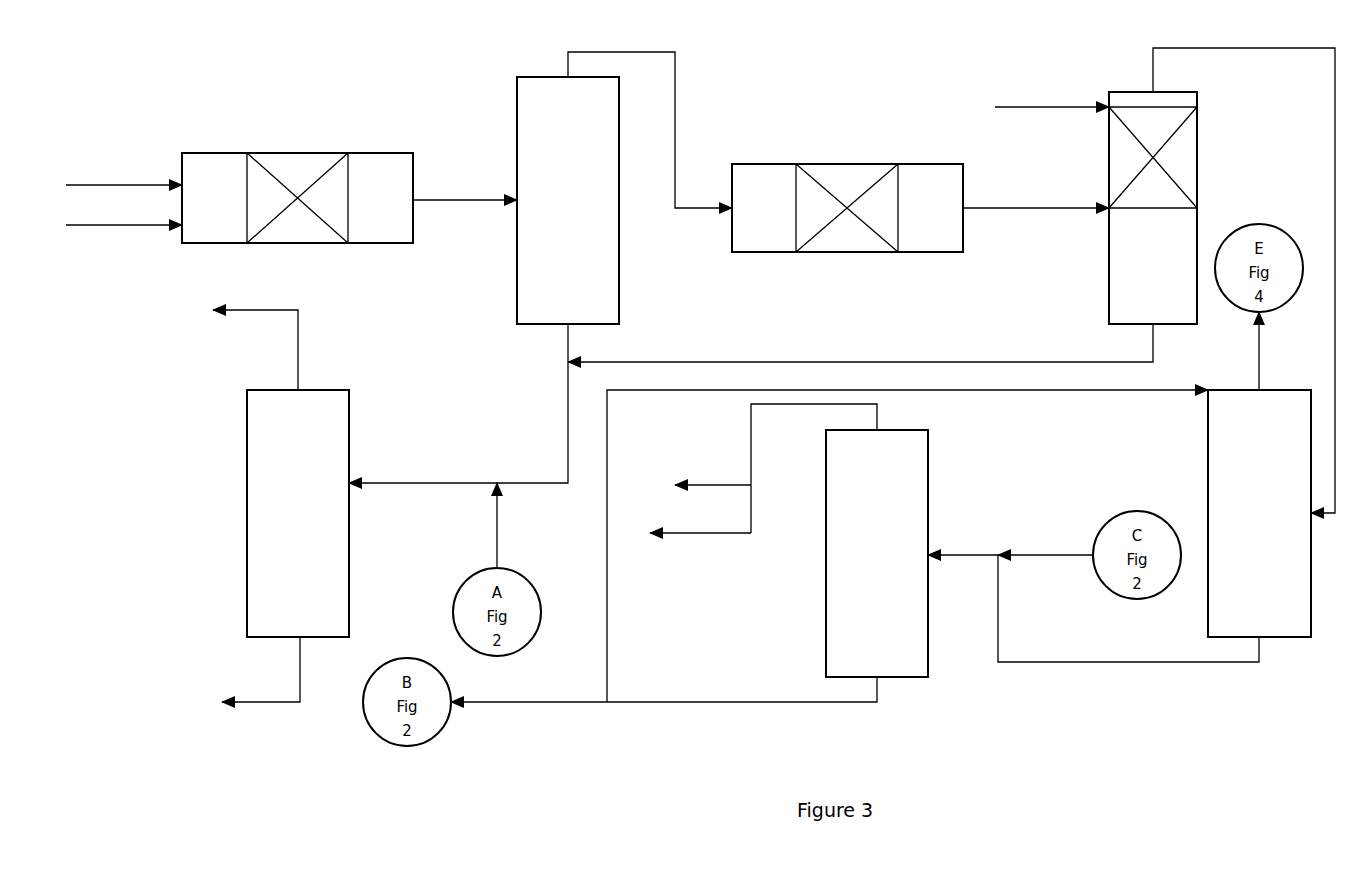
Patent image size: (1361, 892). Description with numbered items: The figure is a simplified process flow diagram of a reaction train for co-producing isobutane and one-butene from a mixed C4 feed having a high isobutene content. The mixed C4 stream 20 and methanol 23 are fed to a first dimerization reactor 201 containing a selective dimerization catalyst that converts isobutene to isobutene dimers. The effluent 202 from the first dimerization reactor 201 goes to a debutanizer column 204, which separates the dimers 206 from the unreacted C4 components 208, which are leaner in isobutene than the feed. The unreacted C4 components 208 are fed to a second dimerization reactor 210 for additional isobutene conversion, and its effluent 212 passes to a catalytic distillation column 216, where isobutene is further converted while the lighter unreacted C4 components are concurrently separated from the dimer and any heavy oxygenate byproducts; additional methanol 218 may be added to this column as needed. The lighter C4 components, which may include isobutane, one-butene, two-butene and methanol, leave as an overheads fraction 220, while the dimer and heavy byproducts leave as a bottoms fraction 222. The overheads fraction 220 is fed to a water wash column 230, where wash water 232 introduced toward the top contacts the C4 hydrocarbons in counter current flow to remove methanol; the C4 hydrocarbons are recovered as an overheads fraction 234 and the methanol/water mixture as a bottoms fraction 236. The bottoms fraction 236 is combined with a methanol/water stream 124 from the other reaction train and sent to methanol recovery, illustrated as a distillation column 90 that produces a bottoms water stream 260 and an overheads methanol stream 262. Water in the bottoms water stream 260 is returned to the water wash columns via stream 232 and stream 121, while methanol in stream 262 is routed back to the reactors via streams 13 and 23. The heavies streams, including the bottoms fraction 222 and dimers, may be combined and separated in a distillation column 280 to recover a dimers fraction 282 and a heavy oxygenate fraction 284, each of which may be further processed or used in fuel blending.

The mixed C4 stream 20 is at (124, 172).
The methanol 23 is at (408, 383).
The first dimerization reactor 201 is at (297, 198).
The effluent 202 is at (465, 188).
The debutanizer column 204 is at (568, 200).
The dimers 206 is at (650, 130).
The unreacted C4 components 208 is at (458, 403).
The second dimerization reactor 210 is at (847, 208).
The effluent 212 is at (1036, 194).
The catalytic distillation column 216 is at (1153, 208).
The additional methanol 218 is at (1052, 94).
The overheads fraction 220 is at (1244, 280).
The bottoms fraction 222 is at (860, 343).
The water wash column 230 is at (1259, 513).
The wash water 232 is at (907, 546).
The overheads fraction 234 is at (1282, 351).
The bottoms fraction 236 is at (1128, 608).
The distillation column 280 is at (298, 513).
The dimers fraction 282 is at (255, 350).
The heavy oxygenate fraction 284 is at (261, 669).
The methanol/water stream 124 is at (795, 525).
The stream 121 is at (529, 719).
The bottoms water stream 260 is at (742, 686).
The overheads methanol stream 262 is at (814, 468).
The distillation column 90 is at (877, 553).
The stream 13 is at (713, 471).